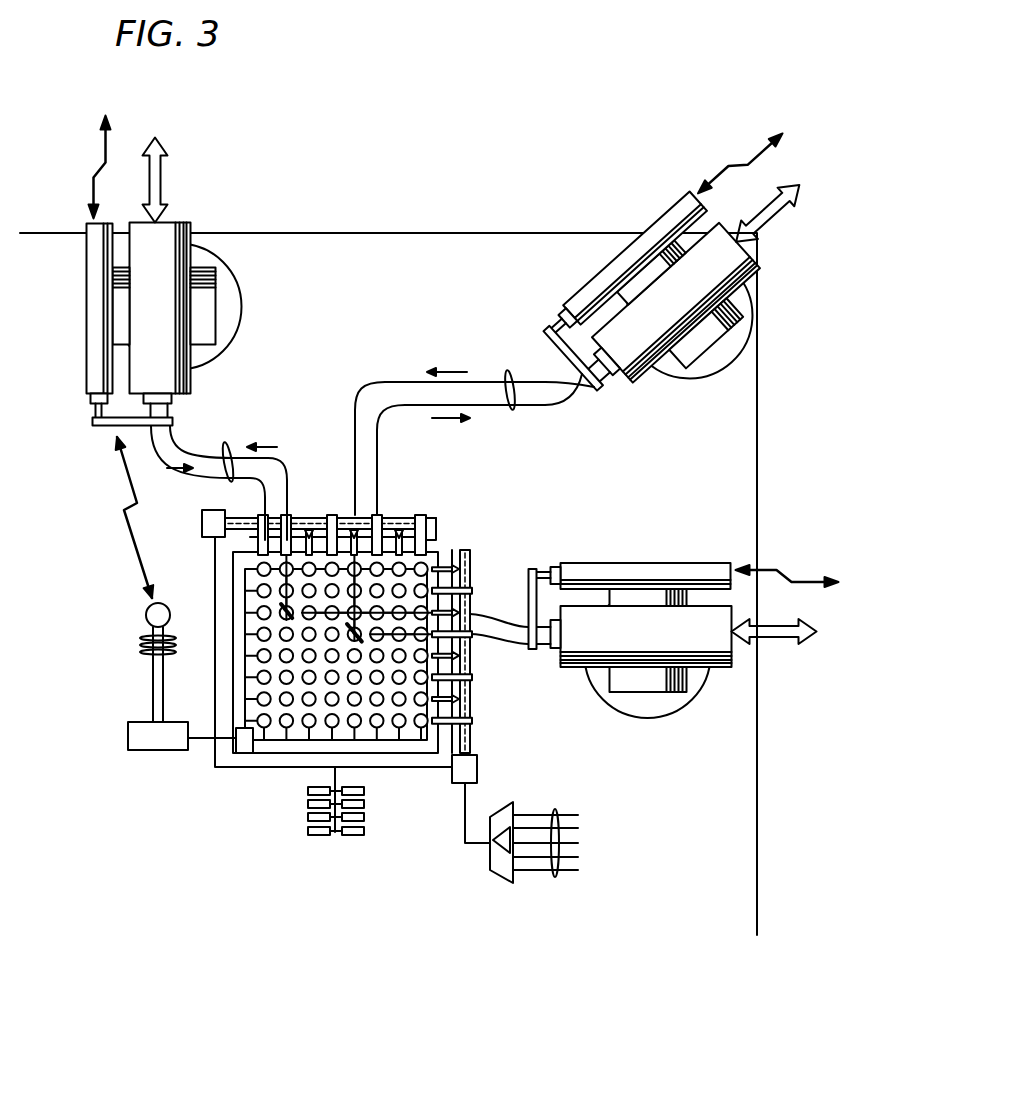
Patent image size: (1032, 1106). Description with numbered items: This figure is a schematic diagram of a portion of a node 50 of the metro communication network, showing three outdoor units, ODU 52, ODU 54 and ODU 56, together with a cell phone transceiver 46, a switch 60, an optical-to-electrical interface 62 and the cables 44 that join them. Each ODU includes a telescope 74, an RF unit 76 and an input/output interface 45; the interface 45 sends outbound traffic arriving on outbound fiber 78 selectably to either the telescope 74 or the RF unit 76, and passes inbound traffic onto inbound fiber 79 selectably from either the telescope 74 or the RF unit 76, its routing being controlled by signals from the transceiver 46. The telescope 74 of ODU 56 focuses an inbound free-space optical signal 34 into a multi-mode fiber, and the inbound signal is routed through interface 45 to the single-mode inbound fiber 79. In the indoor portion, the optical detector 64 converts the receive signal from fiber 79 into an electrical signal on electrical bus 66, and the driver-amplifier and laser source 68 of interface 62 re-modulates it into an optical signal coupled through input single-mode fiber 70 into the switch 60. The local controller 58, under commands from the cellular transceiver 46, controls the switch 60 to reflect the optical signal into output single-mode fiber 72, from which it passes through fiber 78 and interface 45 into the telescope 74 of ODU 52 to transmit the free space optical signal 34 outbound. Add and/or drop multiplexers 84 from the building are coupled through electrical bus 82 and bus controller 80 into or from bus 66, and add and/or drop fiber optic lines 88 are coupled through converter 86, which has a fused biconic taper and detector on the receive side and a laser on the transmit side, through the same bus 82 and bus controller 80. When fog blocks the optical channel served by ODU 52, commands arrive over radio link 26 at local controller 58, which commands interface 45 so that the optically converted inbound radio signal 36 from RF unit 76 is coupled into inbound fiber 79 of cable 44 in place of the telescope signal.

The radio link 26 is at (122, 500).
The optical signal 34 is at (168, 180).
The inbound radio signal 36 is at (98, 180).
The cable 44 is at (230, 445).
The input/output interface 45 is at (92, 421).
The cell phone transceiver 46 is at (128, 738).
The node 50 is at (413, 232).
The ODU 52 is at (240, 296).
The ODU 54 is at (696, 386).
The ODU 56 is at (676, 707).
The local controller 58 is at (236, 758).
The switch 60 is at (312, 689).
The optical-to-electrical interface 62 is at (457, 548).
The optical detector 64 is at (290, 514).
The electrical bus 66 is at (252, 522).
The laser source 68 is at (262, 532).
The input single-mode fiber 70 is at (262, 560).
The output single-mode fiber 72 is at (312, 518).
The telescope 74 is at (190, 238).
The RF unit 76 is at (86, 300).
The outbound fiber 78 is at (192, 440).
The inbound fiber 79 is at (153, 452).
The bus controller 80 is at (205, 512).
The electrical bus 82 is at (212, 765).
The add and/or drop multiplexers 84 is at (314, 838).
The converter 86 is at (490, 855).
The add and/or drop fiber optic lines 88 is at (556, 880).